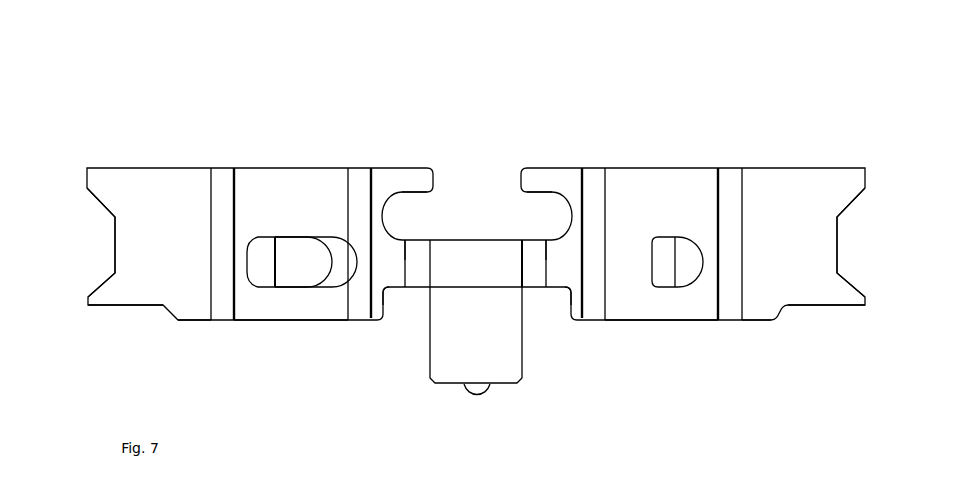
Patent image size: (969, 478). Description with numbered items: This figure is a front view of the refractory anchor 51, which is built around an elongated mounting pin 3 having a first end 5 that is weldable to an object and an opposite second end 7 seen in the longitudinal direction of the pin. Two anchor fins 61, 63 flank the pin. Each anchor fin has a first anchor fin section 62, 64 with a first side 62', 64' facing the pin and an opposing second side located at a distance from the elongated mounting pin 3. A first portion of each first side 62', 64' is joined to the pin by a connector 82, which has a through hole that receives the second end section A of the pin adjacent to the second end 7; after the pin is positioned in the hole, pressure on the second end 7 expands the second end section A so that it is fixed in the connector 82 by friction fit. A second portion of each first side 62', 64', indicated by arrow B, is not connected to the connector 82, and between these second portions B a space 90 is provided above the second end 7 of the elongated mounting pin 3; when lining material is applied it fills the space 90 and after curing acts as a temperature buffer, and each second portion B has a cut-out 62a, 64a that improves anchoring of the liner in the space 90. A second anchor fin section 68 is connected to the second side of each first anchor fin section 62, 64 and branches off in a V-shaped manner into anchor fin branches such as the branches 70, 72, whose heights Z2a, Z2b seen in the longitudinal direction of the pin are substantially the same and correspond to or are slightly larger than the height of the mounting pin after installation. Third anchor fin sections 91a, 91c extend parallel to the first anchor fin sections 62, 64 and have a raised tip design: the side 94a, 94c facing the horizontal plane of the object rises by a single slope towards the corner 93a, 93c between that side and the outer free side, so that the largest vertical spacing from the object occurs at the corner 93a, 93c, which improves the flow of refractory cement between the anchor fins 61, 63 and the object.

The refractory anchor 51 is at (476, 177).
The anchor fin 61 is at (333, 123).
The anchor fin 63 is at (590, 128).
The second end 7 is at (497, 262).
The connector 82 is at (499, 200).
The space 90 is at (472, 185).
The elongated mounting pin 3 is at (447, 366).
The first end 5 is at (488, 388).
The anchor fin branch 70 is at (307, 300).
The anchor fin branch 72 is at (657, 193).
The first anchor fin section 62 is at (397, 323).
The first side 62' is at (434, 290).
The cut-out 62a is at (403, 191).
The first anchor fin section 64 is at (552, 331).
The first side 64' is at (513, 296).
The cut-out 64a is at (560, 192).
The second anchor fin section 68 is at (268, 346).
The third anchor fin section 91a is at (170, 282).
The corner 93a is at (88, 302).
The side 94a is at (120, 306).
The third anchor fin section 91c is at (767, 267).
The corner 93c is at (857, 297).
The side 94c is at (840, 307).
The height Z2a is at (242, 313).
The height Z2b is at (710, 313).
The second end section A is at (462, 242).
The second portion B is at (402, 217).